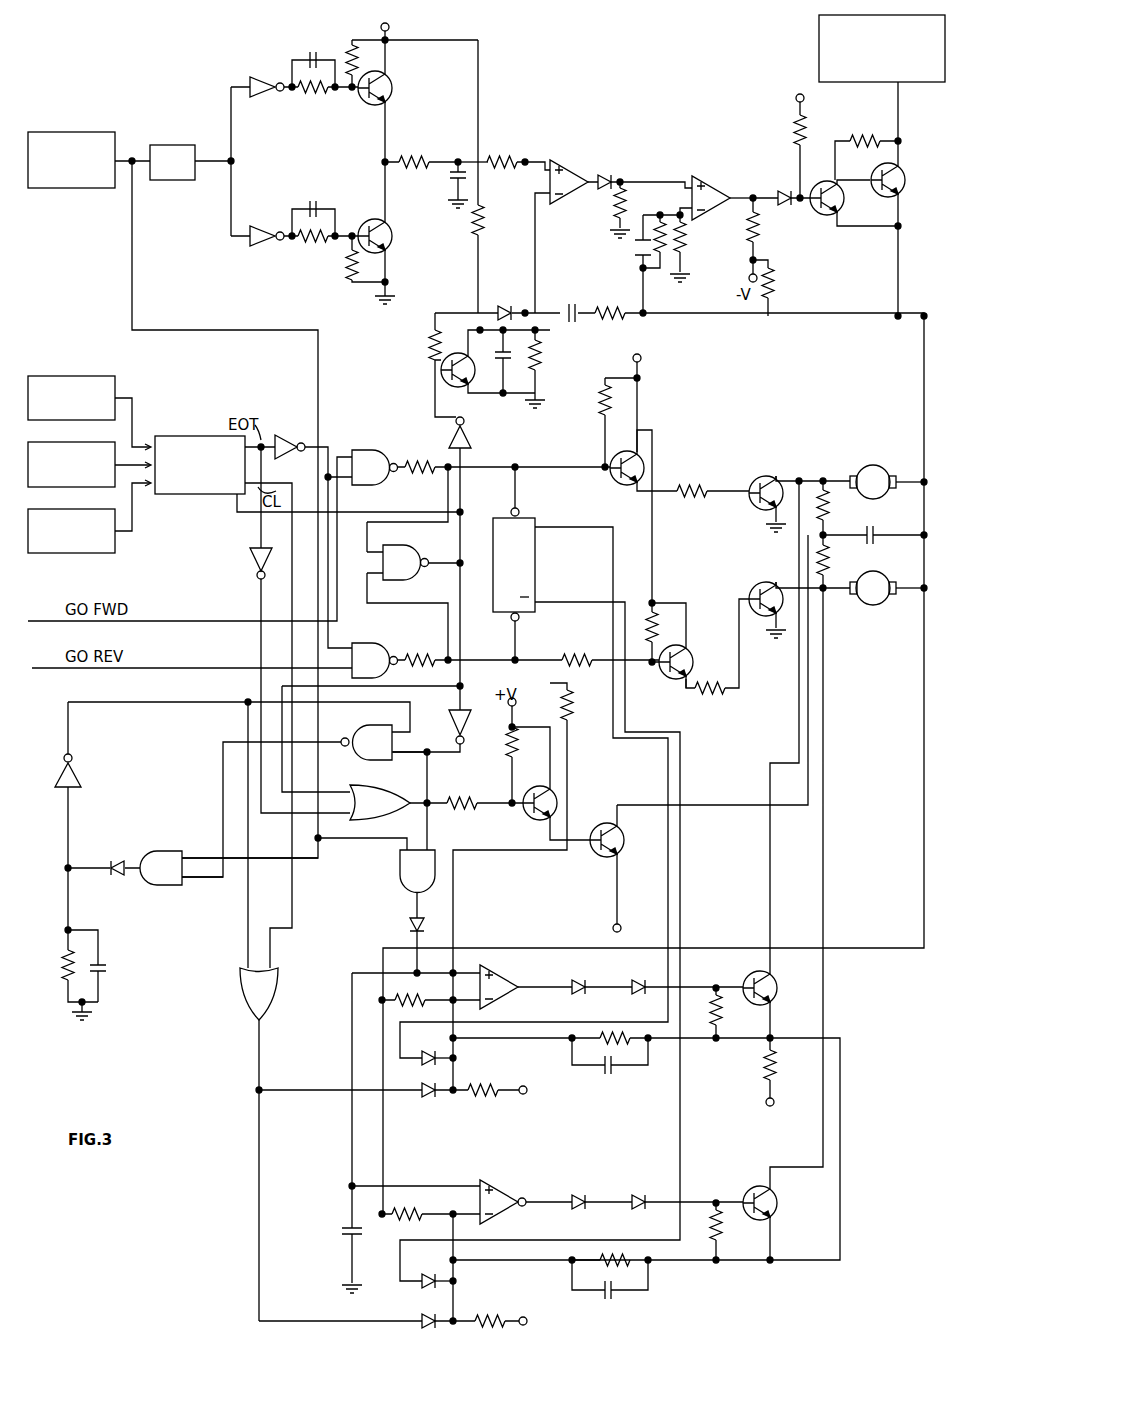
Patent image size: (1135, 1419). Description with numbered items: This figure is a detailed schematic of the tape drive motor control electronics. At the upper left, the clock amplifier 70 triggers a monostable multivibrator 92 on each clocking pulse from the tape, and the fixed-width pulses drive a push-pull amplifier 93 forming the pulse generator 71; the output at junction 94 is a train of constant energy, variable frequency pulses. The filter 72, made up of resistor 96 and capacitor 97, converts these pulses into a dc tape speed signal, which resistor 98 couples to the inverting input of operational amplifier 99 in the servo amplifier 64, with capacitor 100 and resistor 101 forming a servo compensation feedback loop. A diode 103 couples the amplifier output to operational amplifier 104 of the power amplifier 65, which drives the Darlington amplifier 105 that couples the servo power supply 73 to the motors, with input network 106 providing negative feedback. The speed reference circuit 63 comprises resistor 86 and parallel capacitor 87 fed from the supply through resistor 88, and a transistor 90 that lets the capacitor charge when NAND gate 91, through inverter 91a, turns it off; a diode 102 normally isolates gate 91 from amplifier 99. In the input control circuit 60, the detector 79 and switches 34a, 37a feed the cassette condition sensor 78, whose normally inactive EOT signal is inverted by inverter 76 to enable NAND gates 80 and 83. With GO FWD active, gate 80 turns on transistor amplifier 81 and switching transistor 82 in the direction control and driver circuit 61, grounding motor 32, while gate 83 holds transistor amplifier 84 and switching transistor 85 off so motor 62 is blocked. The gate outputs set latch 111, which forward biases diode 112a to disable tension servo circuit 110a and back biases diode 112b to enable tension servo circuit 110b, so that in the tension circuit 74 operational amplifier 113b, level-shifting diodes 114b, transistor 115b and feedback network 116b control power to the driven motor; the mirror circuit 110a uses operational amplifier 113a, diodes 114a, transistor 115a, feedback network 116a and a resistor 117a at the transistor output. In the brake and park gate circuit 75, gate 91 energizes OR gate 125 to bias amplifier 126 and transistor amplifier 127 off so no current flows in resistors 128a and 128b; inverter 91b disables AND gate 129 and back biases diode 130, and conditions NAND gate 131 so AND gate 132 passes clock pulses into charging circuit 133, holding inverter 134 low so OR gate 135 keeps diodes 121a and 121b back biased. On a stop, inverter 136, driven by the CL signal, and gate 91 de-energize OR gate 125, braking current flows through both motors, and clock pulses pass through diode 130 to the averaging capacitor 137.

The clock amplifier 70 is at (78, 131).
The monostable multivibrator 92 is at (168, 145).
The push-pull amplifier 93 is at (364, 155).
The pulse generator 71 is at (187, 230).
The filter 72 is at (452, 235).
The junction 94 is at (397, 155).
The resistor 96 is at (436, 152).
The capacitor 97 is at (453, 187).
The resistor 98 is at (518, 152).
The resistor 88 is at (485, 222).
The operational amplifier 99 is at (563, 164).
The diode 103 is at (617, 168).
The input network 106 is at (672, 213).
The operational amplifier 104 is at (706, 176).
The amplifier 105 is at (935, 162).
The servo power supply 73 is at (913, 83).
The servo amplifier 64 is at (628, 102).
The power amplifier 65 is at (708, 107).
The diode 102 is at (504, 313).
The capacitor 100 is at (570, 306).
The resistor 101 is at (620, 306).
The transistor 90 is at (458, 385).
The capacitor 87 is at (497, 360).
The resistor 86 is at (534, 393).
The input control circuit 60 is at (335, 425).
The speed reference circuit 63 is at (572, 380).
The direction control and driver circuit 61 is at (689, 425).
The end-of-tape detector 79 is at (75, 376).
The switch circuit 34a is at (82, 442).
The switch circuit 37a is at (84, 509).
The cassette condition sensor 78 is at (215, 494).
The inverter 76 is at (298, 410).
The NAND gate 80 is at (378, 437).
The inverter 91a is at (448, 435).
The transistor amplifier 81 is at (657, 476).
The switching transistor 82 is at (762, 469).
The motor 32 is at (877, 452).
The resistor 128a is at (831, 526).
The resistor 128b is at (831, 570).
The switching transistor 85 is at (755, 580).
The motor 62 is at (875, 608).
The transistor amplifier 84 is at (690, 650).
The latch 111 is at (490, 553).
The NAND gate 91 is at (420, 575).
The inverter 136 is at (257, 564).
The NAND gate 83 is at (390, 628).
The inverter 91b is at (466, 744).
The NAND gate 131 is at (378, 714).
The OR gate 125 is at (369, 786).
The amplifier 126 is at (522, 796).
The transistor amplifier 127 is at (608, 829).
The AND gate 129 is at (400, 860).
The diode 130 is at (408, 924).
The AND gate 132 is at (153, 851).
The charging circuit 133 is at (108, 957).
The inverter 134 is at (76, 770).
The OR gate 135 is at (240, 988).
The brake and park gate circuit 75 is at (527, 899).
The operational amplifier 113a is at (503, 948).
The diodes 114a is at (597, 982).
The transistor 115a is at (751, 971).
The diode 112a is at (440, 1054).
The negative feedback network 116a is at (570, 1048).
The tension servo circuit 110a is at (648, 1050).
The resistor 117a is at (760, 1063).
The diode 121a is at (434, 1095).
The tension circuit 74 is at (564, 1132).
The operational amplifier 113b is at (474, 1180).
The tension servo circuit 110b is at (600, 1196).
The diodes 114b is at (622, 1210).
The transistor 115b is at (778, 1205).
The diode 112b is at (440, 1278).
The negative feedback network 116b is at (651, 1289).
The diode 121b is at (436, 1328).
The averaging capacitor 137 is at (340, 1235).